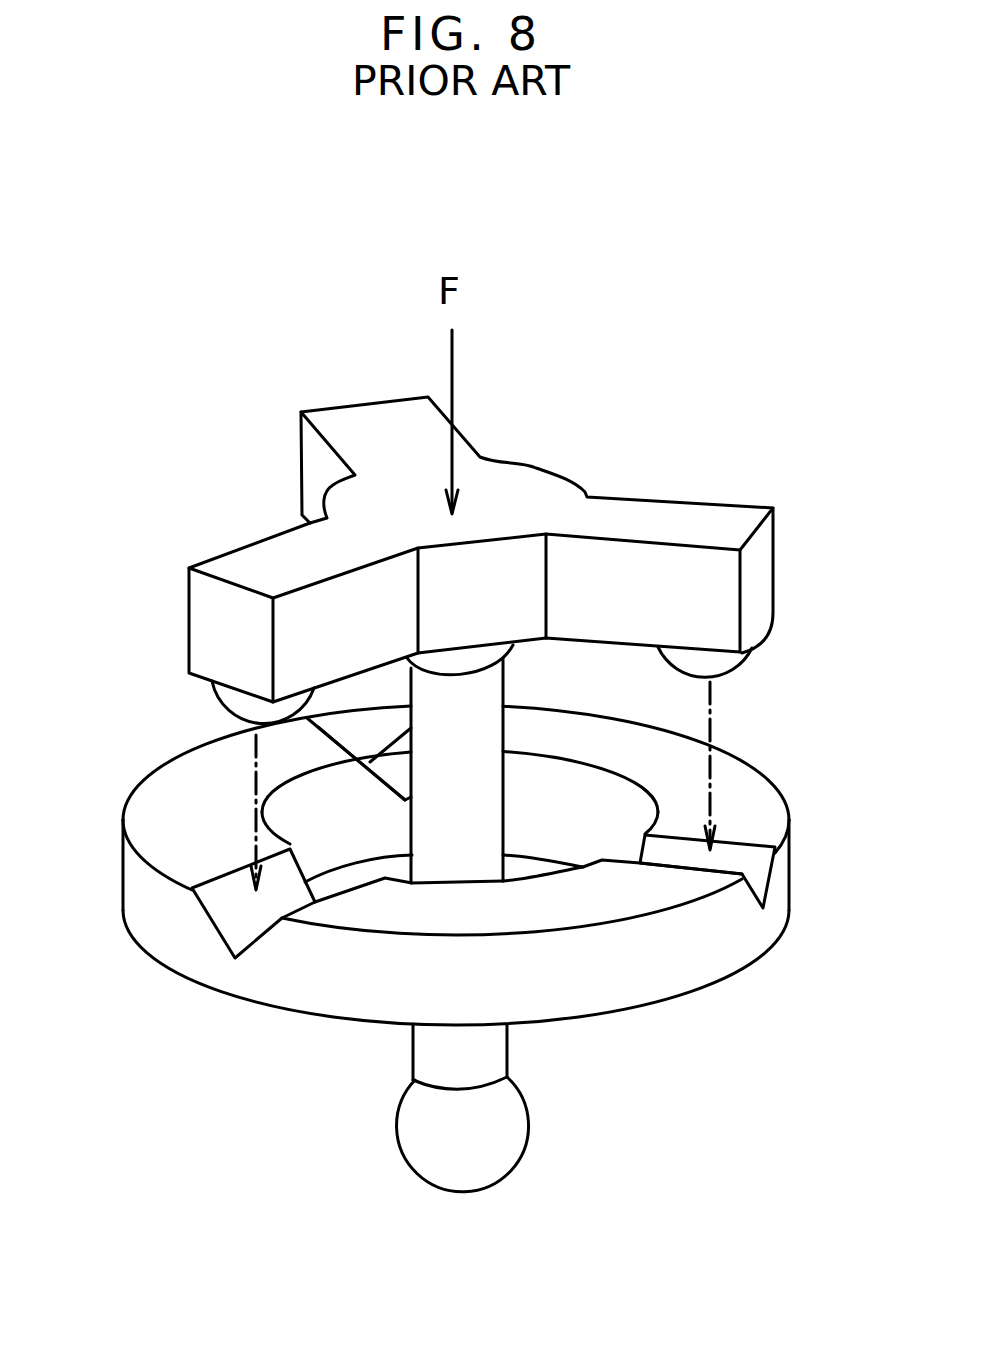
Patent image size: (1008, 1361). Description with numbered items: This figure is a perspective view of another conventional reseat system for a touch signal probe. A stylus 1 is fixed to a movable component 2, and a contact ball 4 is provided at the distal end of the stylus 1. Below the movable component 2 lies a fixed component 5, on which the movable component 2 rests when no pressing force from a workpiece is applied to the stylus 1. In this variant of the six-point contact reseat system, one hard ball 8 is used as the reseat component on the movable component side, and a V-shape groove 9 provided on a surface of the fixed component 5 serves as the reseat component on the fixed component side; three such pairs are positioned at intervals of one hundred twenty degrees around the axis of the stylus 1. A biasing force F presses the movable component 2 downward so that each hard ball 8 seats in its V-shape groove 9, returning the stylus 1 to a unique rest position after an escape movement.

The stylus 1 is at (447, 1052).
The movable component 2 is at (533, 497).
The contact ball 4 is at (453, 1153).
The fixed component 5 is at (623, 978).
The hard ball 8 is at (240, 705).
The V-shape groove 9 is at (400, 747).